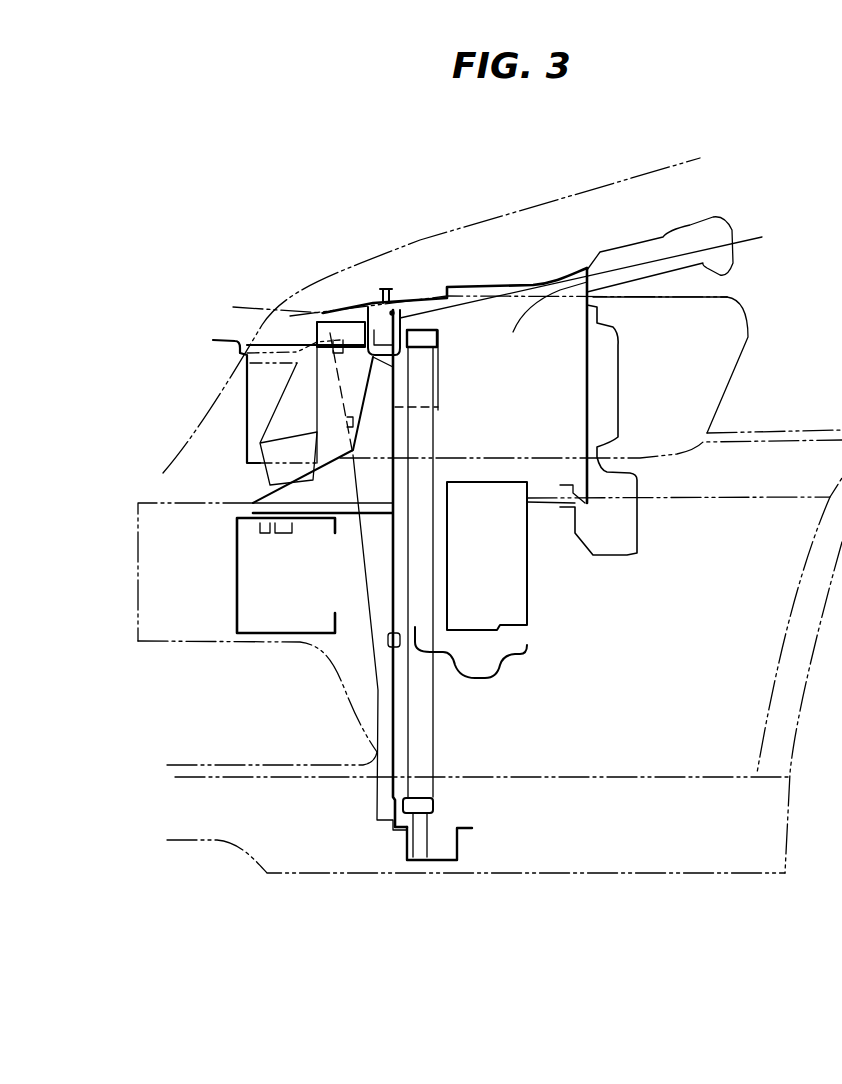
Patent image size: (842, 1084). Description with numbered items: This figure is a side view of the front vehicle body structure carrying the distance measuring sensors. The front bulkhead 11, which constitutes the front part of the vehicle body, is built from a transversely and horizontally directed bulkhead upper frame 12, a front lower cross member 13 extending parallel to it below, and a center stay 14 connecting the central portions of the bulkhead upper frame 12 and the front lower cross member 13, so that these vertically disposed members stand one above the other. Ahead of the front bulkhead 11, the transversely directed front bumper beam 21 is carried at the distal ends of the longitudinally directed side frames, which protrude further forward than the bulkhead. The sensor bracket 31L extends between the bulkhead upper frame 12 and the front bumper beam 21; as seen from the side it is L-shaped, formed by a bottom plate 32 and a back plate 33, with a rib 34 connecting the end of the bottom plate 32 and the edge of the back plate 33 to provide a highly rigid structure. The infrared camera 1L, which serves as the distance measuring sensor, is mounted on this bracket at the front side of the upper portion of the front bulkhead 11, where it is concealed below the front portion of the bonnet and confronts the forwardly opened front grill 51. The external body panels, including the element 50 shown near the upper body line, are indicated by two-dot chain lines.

The roof 50 is at (560, 197).
The front bulkhead 11 is at (420, 293).
The infrared camera 1L is at (316, 311).
The front grill 51 is at (212, 390).
The bulkhead upper frame 12 is at (440, 366).
The back plate 33 is at (396, 433).
The sensor bracket 31L is at (252, 503).
The front bumper beam 21 is at (237, 566).
The bottom plate 32 is at (348, 515).
The rib 34 is at (370, 480).
The center stay 14 is at (371, 627).
The front lower cross member 13 is at (405, 851).